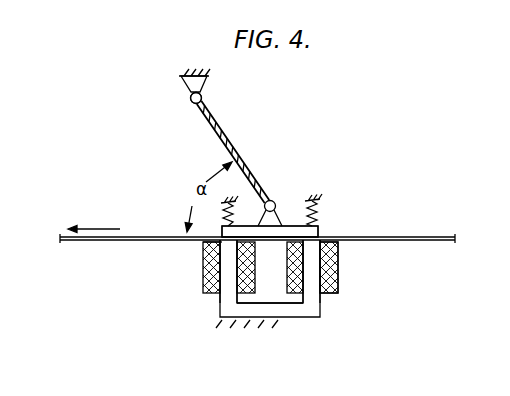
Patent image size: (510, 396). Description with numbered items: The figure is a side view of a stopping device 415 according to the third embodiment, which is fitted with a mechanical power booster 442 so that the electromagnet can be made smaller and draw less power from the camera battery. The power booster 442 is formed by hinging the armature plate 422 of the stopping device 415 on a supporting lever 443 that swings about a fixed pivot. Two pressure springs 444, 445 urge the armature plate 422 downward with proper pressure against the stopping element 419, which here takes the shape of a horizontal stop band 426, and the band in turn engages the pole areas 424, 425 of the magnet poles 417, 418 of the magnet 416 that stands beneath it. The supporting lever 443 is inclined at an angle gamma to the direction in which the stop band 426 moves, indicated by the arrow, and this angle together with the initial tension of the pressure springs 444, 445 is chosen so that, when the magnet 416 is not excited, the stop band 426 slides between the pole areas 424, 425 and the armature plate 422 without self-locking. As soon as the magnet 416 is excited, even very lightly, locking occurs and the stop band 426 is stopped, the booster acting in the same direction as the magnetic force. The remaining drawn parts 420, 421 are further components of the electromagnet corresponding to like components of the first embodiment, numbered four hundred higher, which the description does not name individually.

The stopping device 415 is at (305, 192).
The magnet 416 is at (291, 318).
The magnet pole 417 is at (228, 268).
The magnet pole 418 is at (312, 270).
The stopping element 419 is at (144, 228).
The yoke base 420 is at (248, 297).
The right coil 421 is at (338, 283).
The armature plate 422 is at (290, 226).
The pole area 424 is at (207, 241).
The pole area 425 is at (338, 247).
The stop band 426 is at (107, 239).
The power booster 442 is at (236, 121).
The supporting lever 443 is at (207, 120).
The pressure spring 444 is at (234, 211).
The pressure spring 445 is at (320, 212).